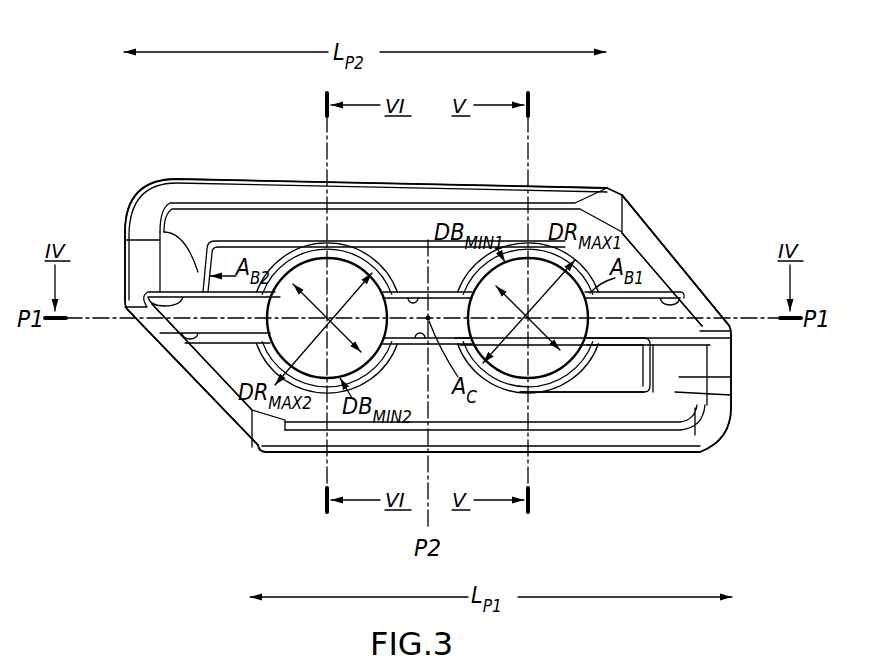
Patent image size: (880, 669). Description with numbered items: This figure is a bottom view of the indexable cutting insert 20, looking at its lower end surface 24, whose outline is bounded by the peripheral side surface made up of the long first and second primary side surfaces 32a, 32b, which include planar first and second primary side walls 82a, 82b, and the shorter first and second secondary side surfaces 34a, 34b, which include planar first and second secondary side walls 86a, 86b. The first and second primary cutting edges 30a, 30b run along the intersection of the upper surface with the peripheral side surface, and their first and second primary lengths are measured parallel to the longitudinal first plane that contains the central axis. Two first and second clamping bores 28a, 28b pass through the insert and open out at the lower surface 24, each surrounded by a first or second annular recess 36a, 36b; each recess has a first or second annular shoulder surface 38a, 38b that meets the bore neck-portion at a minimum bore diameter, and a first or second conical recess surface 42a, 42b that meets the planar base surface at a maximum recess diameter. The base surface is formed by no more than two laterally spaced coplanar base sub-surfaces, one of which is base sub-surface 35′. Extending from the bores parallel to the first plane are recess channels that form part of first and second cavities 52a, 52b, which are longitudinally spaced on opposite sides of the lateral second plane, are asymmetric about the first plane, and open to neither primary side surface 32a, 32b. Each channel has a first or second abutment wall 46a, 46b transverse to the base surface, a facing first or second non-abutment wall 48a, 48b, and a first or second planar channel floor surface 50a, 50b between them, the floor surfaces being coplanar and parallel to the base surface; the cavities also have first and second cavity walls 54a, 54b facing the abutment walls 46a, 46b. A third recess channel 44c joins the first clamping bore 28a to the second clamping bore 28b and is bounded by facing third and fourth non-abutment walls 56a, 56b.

The indexable cutting insert 20 is at (616, 181).
The lower end surface 24 is at (731, 400).
The first clamping bore 28a is at (510, 388).
The second clamping bore 28b is at (345, 392).
The first primary cutting edge 30a is at (648, 455).
The second primary cutting edge 30b is at (192, 234).
The first primary side surface 32a is at (582, 441).
The second primary side surface 32b is at (255, 178).
The first secondary side surface 34a is at (595, 258).
The second secondary side surface 34b is at (165, 350).
The first base sub-surface 35′ is at (714, 412).
The first annular recess 36a is at (530, 240).
The second annular recess 36b is at (352, 247).
The first annular shoulder surface 38a is at (650, 250).
The second annular shoulder surface 38b is at (212, 384).
The first conical recess surface 42a is at (535, 250).
The second conical recess surface 42b is at (290, 378).
The third recess channel 44c is at (449, 306).
The first abutment wall 46a is at (680, 306).
The second abutment wall 46b is at (162, 340).
The first non-abutment wall 48a is at (679, 377).
The second non-abutment wall 48b is at (148, 318).
The first planar channel floor surface 50a is at (678, 313).
The second planar channel floor surface 50b is at (170, 317).
The first cavity 52a is at (623, 364).
The second cavity 52b is at (162, 213).
The first cavity wall 54a is at (557, 392).
The second cavity wall 54b is at (287, 243).
The third non-abutment wall 56a is at (412, 292).
The fourth non-abutment wall 56b is at (420, 344).
The first primary side wall 82a is at (605, 446).
The second primary side wall 82b is at (237, 190).
The first secondary side wall 86a is at (662, 263).
The second secondary side wall 86b is at (190, 371).